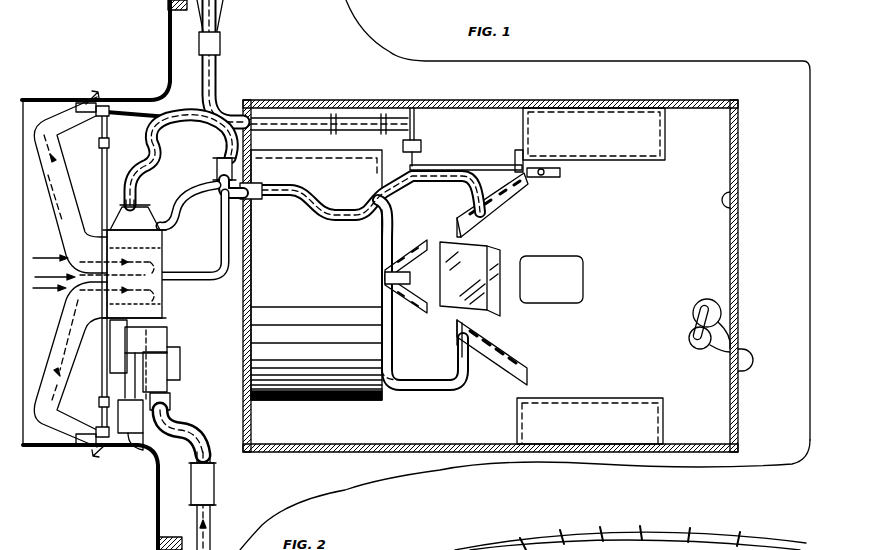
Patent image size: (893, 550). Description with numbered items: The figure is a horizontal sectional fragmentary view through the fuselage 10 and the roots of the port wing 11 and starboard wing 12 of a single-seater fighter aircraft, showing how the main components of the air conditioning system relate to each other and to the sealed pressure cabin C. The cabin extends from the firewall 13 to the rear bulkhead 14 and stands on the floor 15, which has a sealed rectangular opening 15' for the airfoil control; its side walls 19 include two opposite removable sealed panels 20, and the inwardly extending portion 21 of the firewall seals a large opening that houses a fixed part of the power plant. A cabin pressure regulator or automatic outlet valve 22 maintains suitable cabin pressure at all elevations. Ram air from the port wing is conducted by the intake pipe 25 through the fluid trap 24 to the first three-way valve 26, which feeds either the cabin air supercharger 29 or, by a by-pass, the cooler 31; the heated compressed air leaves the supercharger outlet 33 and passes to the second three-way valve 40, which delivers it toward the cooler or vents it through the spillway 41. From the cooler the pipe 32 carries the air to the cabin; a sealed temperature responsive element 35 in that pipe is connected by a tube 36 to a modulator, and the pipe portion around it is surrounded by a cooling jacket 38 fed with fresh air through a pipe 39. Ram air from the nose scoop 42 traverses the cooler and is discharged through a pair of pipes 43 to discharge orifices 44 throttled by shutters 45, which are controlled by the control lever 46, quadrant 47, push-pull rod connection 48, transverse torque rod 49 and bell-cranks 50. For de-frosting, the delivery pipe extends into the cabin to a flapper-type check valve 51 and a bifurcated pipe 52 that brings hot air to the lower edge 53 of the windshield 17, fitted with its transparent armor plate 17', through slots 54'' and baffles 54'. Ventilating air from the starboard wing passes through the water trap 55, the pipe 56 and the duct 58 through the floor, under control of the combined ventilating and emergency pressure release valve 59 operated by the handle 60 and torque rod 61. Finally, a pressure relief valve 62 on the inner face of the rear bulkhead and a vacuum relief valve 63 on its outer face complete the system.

The fuselage 10 is at (132, 98).
The left or port wing 11 is at (525, 495).
The right or starboard wing 12 is at (545, 220).
The firewall 13 is at (243, 324).
The rear bulkhead 14 is at (739, 283).
The floor 15 is at (601, 313).
The rectangular opening 15' is at (551, 269).
The windshield 17 is at (456, 317).
The transparent armor plate 17' is at (470, 279).
The cabin side walls 19 is at (477, 104).
The removable sealed panels 20 is at (591, 276).
The inwardly extending portion of the fire wall 21 is at (316, 275).
The cabin pressure regulator or automatic outlet valve 22 is at (694, 327).
The fluid trap 24 is at (195, 491).
The conduit or intake pipe 25 is at (190, 426).
The first three-way valve 26 is at (172, 403).
The cabin air supercharger 29 is at (142, 358).
The cooler 31 is at (162, 258).
The pipe or duct 32 is at (152, 143).
The outlet of the supercharger 33 is at (143, 385).
The sealed temperature responsive element 35 is at (215, 168).
The tube 36 is at (178, 210).
The cooling jacket 38 is at (218, 188).
The pipe 39 is at (184, 278).
The second three-way valve 40 is at (130, 416).
The spillway 41 is at (143, 450).
The nose scoop 42 is at (54, 273).
The pipes 43 is at (62, 140).
The discharge orifices 44 is at (80, 100).
The shutters 45 is at (99, 90).
The control lever 46 is at (541, 176).
The quadrant 47 is at (561, 172).
The push-pull rod connection 48 is at (172, 115).
The transverse torque rod 49 is at (102, 175).
The bell-cranks 50 is at (98, 115).
The check valve 51 is at (262, 188).
The bifurcated pipe 52 is at (393, 200).
The lower edge of the windshield 53 is at (520, 378).
The baffles 54' is at (495, 332).
The slots or elongated openings 54'' is at (518, 345).
The water trap 55 is at (222, 50).
The pipe 56 is at (218, 92).
The duct 58 is at (418, 127).
The combined ventilating and emergency pressure release valve 59 is at (424, 146).
The handle 60 is at (517, 152).
The torque rod 61 is at (466, 163).
The pressure relief valve 62 is at (714, 200).
The vacuum relief valve 63 is at (753, 361).